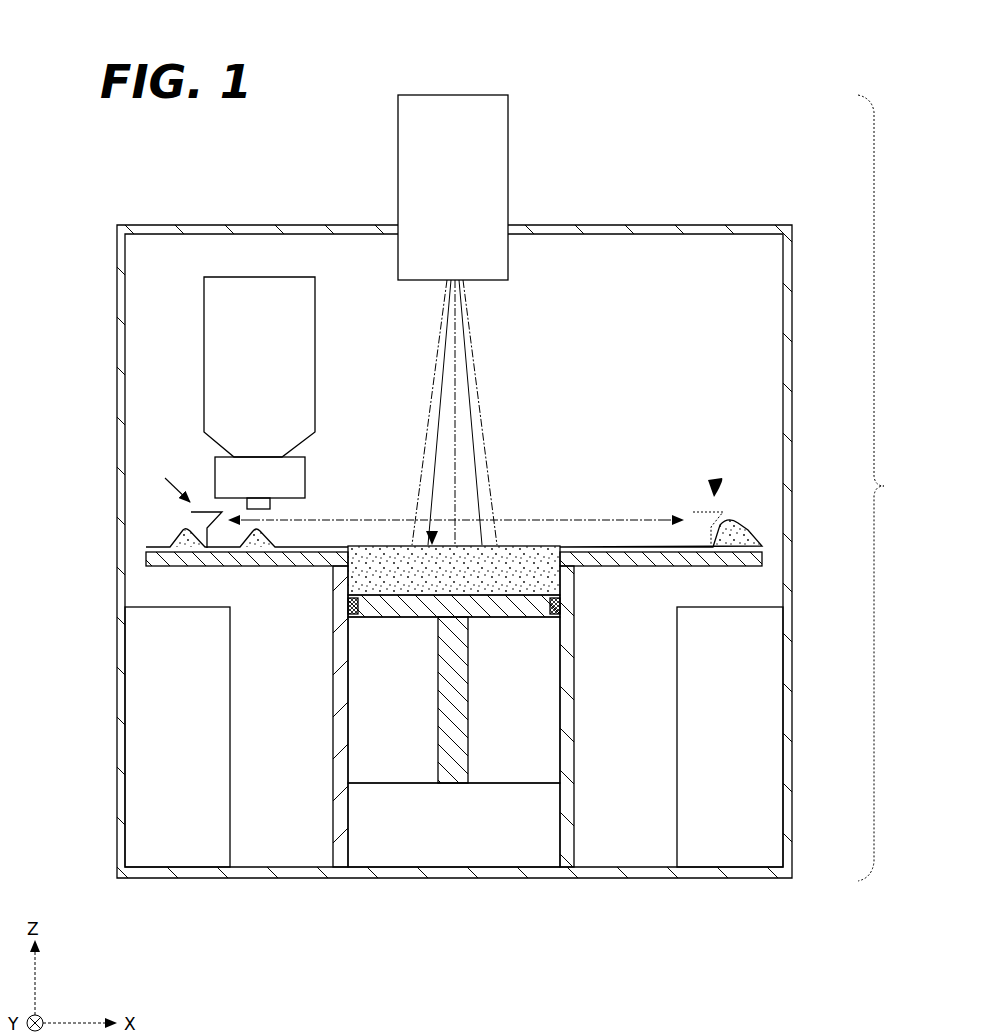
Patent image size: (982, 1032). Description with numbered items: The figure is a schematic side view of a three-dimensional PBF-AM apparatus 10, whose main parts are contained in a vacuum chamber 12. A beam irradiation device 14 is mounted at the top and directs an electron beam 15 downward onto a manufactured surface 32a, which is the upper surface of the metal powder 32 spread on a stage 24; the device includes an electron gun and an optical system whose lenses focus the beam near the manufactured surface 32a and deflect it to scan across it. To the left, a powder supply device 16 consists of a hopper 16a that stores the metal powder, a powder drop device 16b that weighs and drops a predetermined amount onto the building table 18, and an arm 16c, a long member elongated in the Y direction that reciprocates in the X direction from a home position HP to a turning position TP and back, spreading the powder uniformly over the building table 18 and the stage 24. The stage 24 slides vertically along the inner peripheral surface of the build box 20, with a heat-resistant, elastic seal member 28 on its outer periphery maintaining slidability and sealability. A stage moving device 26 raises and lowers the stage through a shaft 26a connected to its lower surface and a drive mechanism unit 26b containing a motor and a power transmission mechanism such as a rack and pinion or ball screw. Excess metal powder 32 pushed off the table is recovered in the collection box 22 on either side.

The three-dimensional PBF-AM apparatus 10 is at (889, 488).
The vacuum chamber 12 is at (793, 248).
The beam irradiation device 14 is at (507, 178).
The electron beam 15 is at (478, 386).
The powder supply device 16 is at (166, 401).
The hopper 16a is at (220, 313).
The powder drop device 16b is at (222, 471).
The arm 16c is at (192, 517).
The building table 18 is at (148, 557).
The build box 20 is at (574, 680).
The collection box 22 is at (148, 690).
The stage 24 is at (383, 614).
The stage moving device 26 is at (296, 742).
The shaft 26a is at (438, 708).
The drive mechanism unit 26b is at (494, 783).
The seal member 28 is at (575, 592).
The metal powder 32 is at (520, 548).
The manufactured surface 32a is at (432, 530).
The home position HP is at (165, 478).
The turning position TP is at (723, 470).